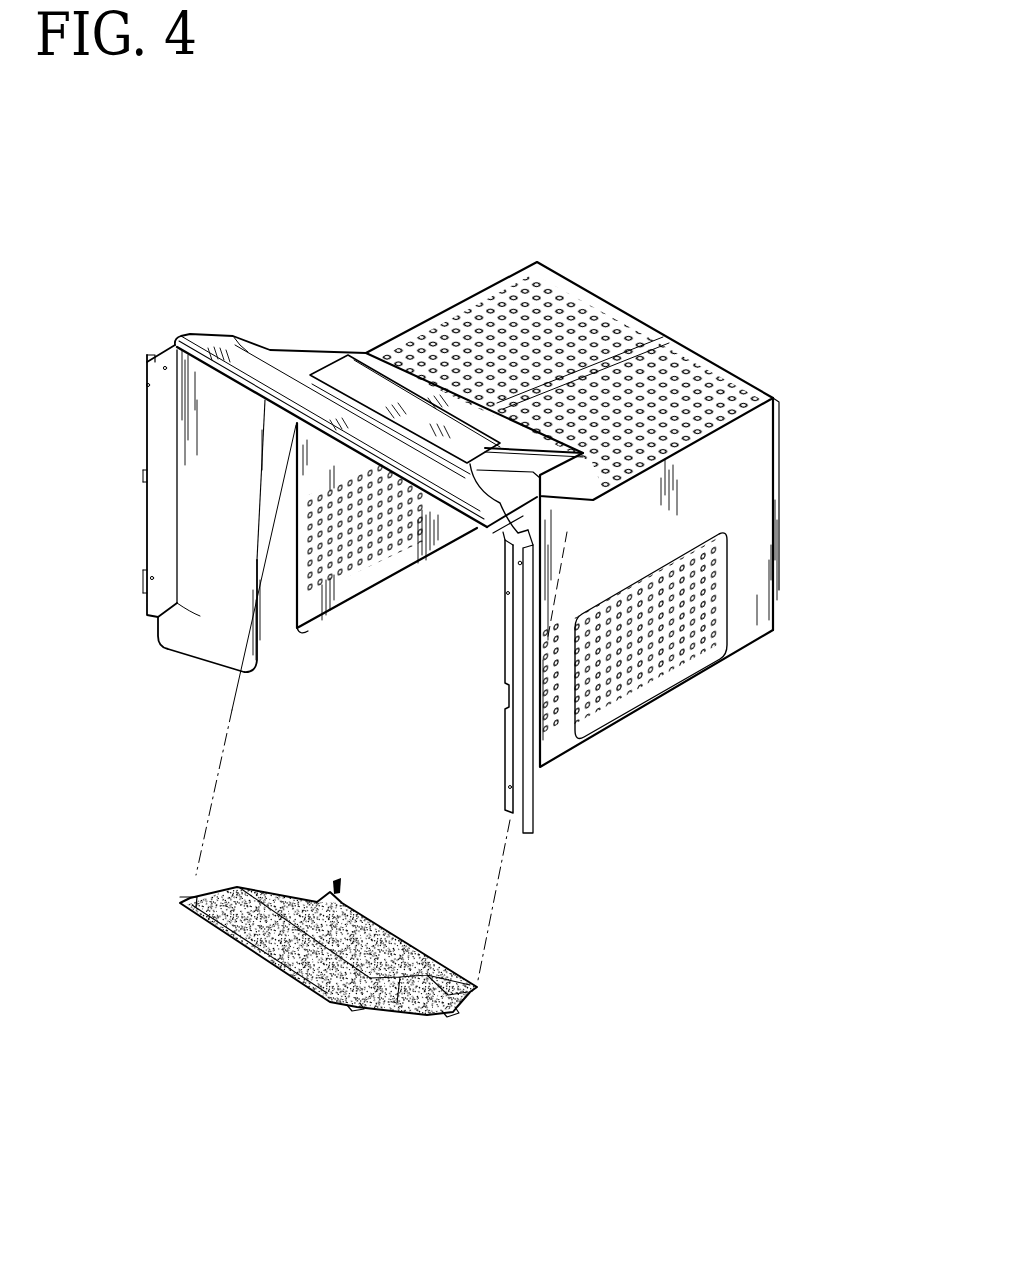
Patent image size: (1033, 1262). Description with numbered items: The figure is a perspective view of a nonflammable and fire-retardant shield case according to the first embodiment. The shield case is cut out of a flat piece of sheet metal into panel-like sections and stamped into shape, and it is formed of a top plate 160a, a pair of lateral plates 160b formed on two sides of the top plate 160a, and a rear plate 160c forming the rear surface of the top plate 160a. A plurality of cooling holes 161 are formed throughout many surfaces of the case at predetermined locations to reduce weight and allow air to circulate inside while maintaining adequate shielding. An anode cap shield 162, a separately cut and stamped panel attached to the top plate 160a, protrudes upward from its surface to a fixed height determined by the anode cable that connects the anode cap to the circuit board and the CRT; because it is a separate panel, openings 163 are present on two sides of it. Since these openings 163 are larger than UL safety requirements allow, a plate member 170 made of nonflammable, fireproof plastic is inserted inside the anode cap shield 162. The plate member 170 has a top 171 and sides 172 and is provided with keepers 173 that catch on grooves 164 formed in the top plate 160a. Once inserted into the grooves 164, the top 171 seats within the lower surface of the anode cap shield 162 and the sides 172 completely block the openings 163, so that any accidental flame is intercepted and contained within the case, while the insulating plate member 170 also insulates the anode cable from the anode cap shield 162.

The top plate 160a is at (293, 371).
The lateral plates 160b is at (760, 608).
The rear plate 160c is at (780, 488).
The cooling holes 161 is at (607, 337).
The anode cap shield 162 is at (428, 380).
The openings 163 is at (490, 557).
The grooves 164 is at (542, 477).
The plate member 170 is at (386, 953).
The top 171 is at (370, 940).
The sides 172 is at (470, 997).
The keepers 173 is at (450, 1015).